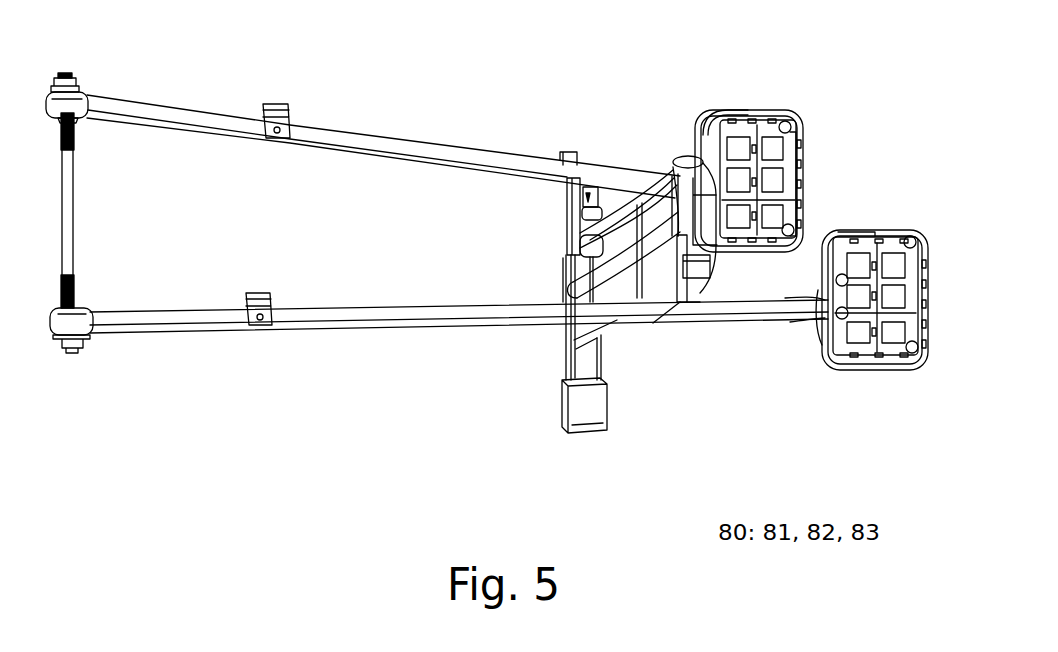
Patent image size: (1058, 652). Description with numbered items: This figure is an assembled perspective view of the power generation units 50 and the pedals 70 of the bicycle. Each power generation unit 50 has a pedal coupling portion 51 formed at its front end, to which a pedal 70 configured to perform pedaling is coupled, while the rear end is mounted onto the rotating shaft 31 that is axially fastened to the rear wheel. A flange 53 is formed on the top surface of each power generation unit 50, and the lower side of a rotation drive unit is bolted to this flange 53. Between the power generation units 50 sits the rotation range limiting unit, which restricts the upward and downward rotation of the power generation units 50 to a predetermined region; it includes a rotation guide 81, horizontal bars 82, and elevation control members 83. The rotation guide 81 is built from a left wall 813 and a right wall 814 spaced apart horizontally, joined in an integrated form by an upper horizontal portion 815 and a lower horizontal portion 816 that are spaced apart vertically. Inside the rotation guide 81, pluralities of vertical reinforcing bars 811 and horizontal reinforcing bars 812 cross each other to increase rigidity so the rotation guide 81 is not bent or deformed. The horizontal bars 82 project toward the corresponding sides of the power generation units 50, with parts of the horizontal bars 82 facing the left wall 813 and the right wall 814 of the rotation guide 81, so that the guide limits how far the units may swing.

The rotating shaft 31 is at (70, 225).
The power generation unit 50 is at (210, 120).
The pedal coupling portion 51 is at (733, 110).
The flange 53 is at (263, 328).
The pedal 70 is at (823, 125).
The rotation guide 81 is at (718, 281).
The horizontal bar 82 is at (572, 220).
The elevation control member 83 is at (590, 185).
The vertical reinforcing bar 811 is at (623, 193).
The horizontal reinforcing bar 812 is at (643, 288).
The left wall 813 is at (670, 173).
The right wall 814 is at (618, 333).
The upper horizontal portion 815 is at (807, 207).
The lower horizontal portion 816 is at (577, 267).